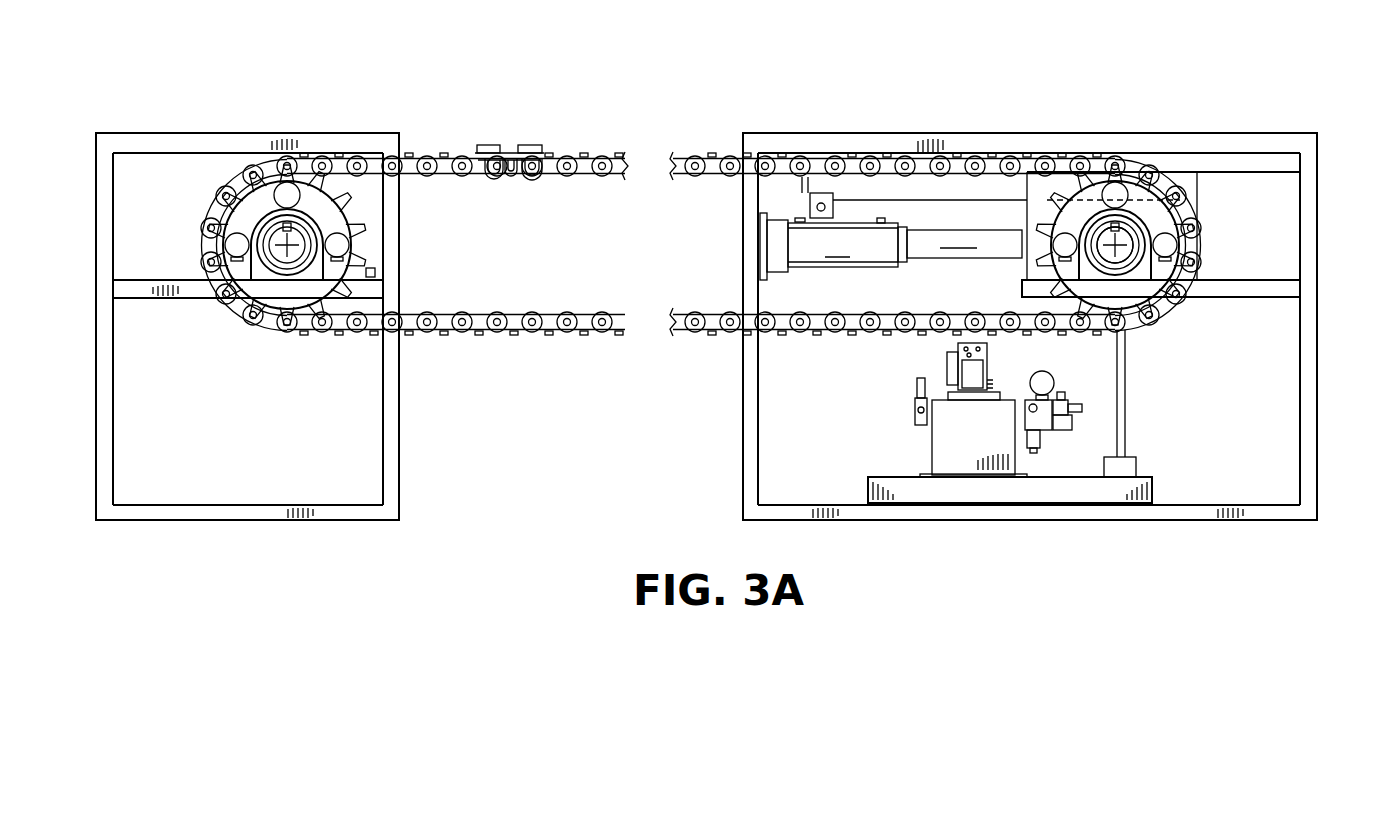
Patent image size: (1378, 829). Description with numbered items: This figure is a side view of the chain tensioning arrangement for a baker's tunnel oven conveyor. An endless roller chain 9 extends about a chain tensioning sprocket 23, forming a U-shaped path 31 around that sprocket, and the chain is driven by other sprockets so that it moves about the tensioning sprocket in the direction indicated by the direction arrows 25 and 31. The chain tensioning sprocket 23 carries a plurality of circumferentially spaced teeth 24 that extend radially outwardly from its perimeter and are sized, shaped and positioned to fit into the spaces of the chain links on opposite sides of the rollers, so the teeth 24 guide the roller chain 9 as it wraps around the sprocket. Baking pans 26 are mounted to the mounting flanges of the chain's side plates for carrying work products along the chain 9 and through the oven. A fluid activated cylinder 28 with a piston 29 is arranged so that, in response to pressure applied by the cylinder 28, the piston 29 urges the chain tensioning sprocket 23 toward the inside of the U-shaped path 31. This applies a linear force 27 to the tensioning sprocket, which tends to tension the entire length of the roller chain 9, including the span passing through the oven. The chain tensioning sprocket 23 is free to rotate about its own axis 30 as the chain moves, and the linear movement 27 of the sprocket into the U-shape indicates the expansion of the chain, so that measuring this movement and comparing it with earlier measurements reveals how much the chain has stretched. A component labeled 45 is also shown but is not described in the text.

The roller chain 9 is at (576, 152).
The chain tensioning sprocket 23 is at (1112, 198).
The teeth 24 is at (364, 193).
The direction arrow 25 is at (1152, 194).
The baking pans 26 is at (313, 152).
The linear force 27 is at (1097, 293).
The fluid activated cylinder 28 is at (867, 271).
The piston 29 is at (992, 263).
The axis 30 is at (1134, 237).
The U-shaped path 31 is at (1283, 230).
The limit switch 45 is at (822, 192).